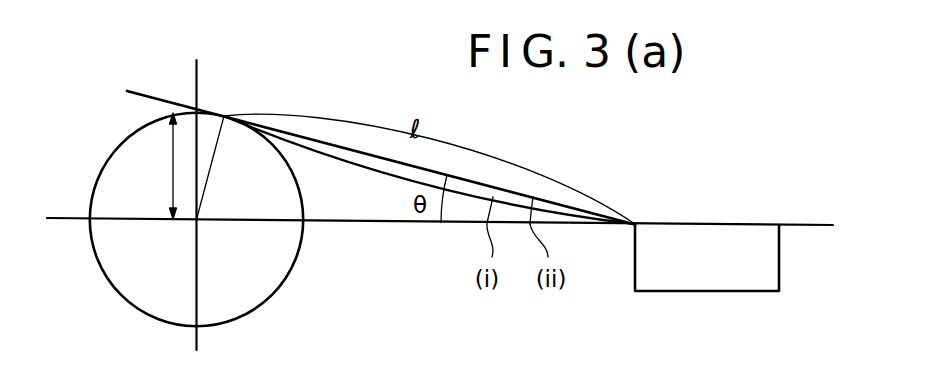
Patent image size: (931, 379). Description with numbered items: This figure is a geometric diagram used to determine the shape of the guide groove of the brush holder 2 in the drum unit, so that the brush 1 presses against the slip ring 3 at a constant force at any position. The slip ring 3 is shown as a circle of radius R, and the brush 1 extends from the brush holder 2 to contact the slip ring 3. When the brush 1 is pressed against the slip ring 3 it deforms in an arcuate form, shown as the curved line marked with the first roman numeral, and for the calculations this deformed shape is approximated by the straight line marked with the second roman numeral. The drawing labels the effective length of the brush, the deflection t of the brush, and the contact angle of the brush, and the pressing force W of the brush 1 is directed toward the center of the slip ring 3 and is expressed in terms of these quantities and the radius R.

The brush 1 is at (548, 203).
The brush holder 2 is at (762, 248).
The slip ring 3 is at (122, 143).
The pressing force W is at (240, 82).
The deflection of the brush t is at (162, 166).
The radius of the slip ring R is at (226, 120).